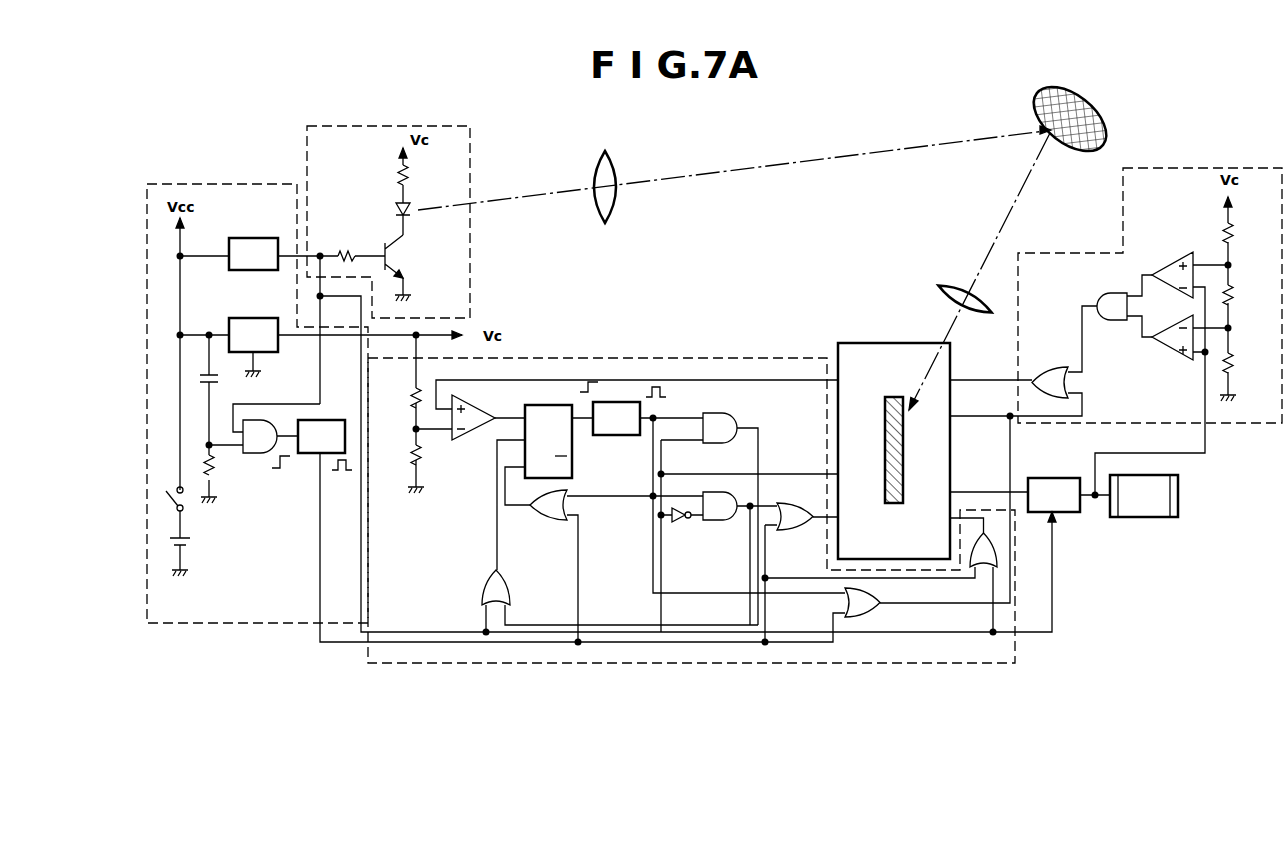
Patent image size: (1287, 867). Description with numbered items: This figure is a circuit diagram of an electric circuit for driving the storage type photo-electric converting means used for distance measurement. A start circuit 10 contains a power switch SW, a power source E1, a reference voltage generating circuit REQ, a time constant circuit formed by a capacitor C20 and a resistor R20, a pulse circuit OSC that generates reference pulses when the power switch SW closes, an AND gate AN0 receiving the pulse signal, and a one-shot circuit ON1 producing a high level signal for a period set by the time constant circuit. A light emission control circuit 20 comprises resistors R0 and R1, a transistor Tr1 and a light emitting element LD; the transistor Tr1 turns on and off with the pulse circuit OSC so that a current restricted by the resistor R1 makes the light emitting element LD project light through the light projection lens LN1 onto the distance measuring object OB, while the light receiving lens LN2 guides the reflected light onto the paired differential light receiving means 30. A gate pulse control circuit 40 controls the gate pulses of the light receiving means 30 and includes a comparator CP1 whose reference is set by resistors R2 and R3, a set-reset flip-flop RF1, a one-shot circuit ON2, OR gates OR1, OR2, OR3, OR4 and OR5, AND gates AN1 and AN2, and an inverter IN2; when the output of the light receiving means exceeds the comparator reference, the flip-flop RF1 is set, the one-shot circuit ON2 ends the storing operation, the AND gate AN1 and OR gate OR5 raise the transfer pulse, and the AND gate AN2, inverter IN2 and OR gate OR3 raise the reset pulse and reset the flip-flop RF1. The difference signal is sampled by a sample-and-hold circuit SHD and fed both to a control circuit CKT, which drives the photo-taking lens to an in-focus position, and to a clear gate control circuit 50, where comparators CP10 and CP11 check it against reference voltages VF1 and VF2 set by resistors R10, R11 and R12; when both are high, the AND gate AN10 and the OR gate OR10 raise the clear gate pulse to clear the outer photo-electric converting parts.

The start circuit 10 is at (250, 184).
The light emission control circuit 20 is at (425, 126).
The paired differential light receiving means 30 is at (870, 343).
The gate pulse control circuit 40 is at (780, 358).
The clear gate control circuit 50 is at (1215, 168).
The distance measuring object OB is at (1100, 120).
The light projection lens LN1 is at (613, 168).
The light receiving lens LN2 is at (958, 290).
The pulse circuit OSC is at (253, 254).
The reference voltage generating circuit REQ is at (253, 347).
The capacitor C20 is at (218, 378).
The power switch SW is at (166, 485).
The resistor R20 is at (212, 470).
The AND gate AN0 is at (255, 453).
The one-shot circuit ON1 is at (325, 445).
The power source E1 is at (188, 541).
The resistor R1 is at (399, 176).
The light emitting element LD is at (398, 210).
The resistor R0 is at (346, 254).
The transistor Tr1 is at (403, 256).
The resistor R2 is at (413, 395).
The resistor R3 is at (413, 452).
The comparator CP1 is at (473, 440).
The set-reset flip-flop RF1 is at (575, 448).
The one-shot circuit ON2 is at (629, 411).
The AND gate AN1 is at (725, 415).
The AND gate AN2 is at (722, 522).
The inverter IN2 is at (680, 522).
The OR gate OR1 is at (482, 590).
The OR gate OR2 is at (545, 520).
The OR gate OR3 is at (796, 530).
The OR gate OR4 is at (872, 593).
The OR gate OR5 is at (990, 550).
The sample-and-hold circuit SHD is at (1054, 495).
The control circuit CKT is at (1144, 496).
The OR gate OR10 is at (1050, 365).
The AND gate AN10 is at (1110, 295).
The comparator CP10 is at (1170, 260).
The comparator CP11 is at (1170, 352).
The reference voltage VF1 is at (1231, 328).
The reference voltage VF2 is at (1226, 264).
The resistor R10 is at (1231, 235).
The resistor R11 is at (1231, 293).
The resistor R12 is at (1231, 362).